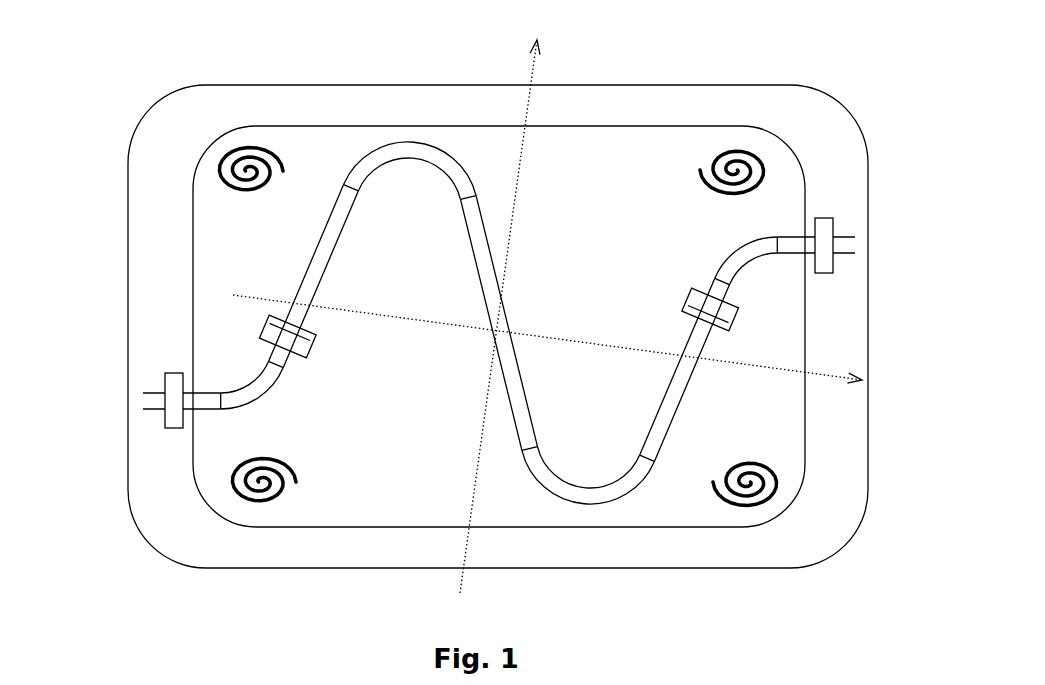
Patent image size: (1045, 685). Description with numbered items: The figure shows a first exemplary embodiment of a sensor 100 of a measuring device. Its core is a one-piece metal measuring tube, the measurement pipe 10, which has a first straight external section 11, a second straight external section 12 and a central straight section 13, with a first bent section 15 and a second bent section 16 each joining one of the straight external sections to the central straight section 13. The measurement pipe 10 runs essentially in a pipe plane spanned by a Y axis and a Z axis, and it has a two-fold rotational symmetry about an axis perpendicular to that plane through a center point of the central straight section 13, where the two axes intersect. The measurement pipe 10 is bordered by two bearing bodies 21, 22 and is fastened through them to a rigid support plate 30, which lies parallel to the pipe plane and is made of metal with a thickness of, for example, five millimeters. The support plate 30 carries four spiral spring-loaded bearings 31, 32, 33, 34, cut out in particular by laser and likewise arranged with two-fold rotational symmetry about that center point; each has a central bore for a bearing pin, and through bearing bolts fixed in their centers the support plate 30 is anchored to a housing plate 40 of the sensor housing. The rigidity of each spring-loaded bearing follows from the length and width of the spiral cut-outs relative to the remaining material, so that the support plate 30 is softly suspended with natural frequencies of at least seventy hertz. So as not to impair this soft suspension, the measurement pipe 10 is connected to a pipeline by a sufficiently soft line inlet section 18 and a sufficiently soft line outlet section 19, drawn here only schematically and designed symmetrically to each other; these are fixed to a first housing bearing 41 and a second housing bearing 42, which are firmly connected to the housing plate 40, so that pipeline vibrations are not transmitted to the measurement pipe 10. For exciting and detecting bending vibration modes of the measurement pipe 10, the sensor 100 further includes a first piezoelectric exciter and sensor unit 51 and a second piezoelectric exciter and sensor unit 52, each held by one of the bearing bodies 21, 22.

The sensor 100 is at (139, 51).
The measurement pipe 10 is at (312, 253).
The first straight external section 11 is at (677, 355).
The second straight external section 12 is at (317, 267).
The central straight section 13 is at (494, 272).
The first bent section 15 is at (590, 496).
The second bent section 16 is at (400, 142).
The line inlet section 18 is at (247, 383).
The line outlet section 19 is at (748, 266).
The bearing body 21 is at (740, 310).
The bearing body 22 is at (262, 333).
The support plate 30 is at (192, 172).
The spiral spring-loaded bearing 31 is at (752, 500).
The spiral spring-loaded bearing 32 is at (757, 148).
The spiral spring-loaded bearing 33 is at (230, 147).
The spiral spring-loaded bearing 34 is at (240, 500).
The housing plate 40 is at (128, 167).
The first housing bearing 41 is at (173, 415).
The second housing bearing 42 is at (822, 232).
The first piezoelectric exciter and sensor unit 51 is at (727, 323).
The second piezoelectric exciter and sensor unit 52 is at (267, 320).